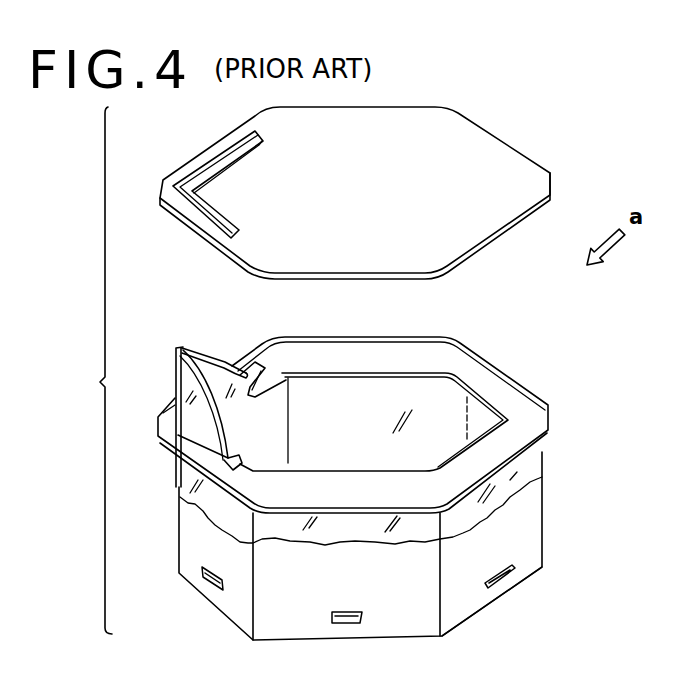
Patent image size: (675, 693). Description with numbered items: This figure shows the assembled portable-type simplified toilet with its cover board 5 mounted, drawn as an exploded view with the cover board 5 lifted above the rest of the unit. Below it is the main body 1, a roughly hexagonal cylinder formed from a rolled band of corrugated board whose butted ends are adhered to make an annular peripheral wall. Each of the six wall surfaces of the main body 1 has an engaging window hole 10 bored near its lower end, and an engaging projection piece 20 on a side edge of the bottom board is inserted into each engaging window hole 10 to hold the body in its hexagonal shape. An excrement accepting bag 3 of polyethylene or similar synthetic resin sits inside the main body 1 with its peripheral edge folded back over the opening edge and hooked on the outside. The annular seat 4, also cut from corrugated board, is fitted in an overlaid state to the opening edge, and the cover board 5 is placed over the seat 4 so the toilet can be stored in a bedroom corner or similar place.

The main body 1 is at (543, 548).
The excrement accepting bag 3 is at (548, 467).
The seat 4 is at (513, 430).
The cover board 5 is at (494, 150).
The engaging window hole 10 is at (513, 566).
The engaging projection piece 20 is at (503, 578).